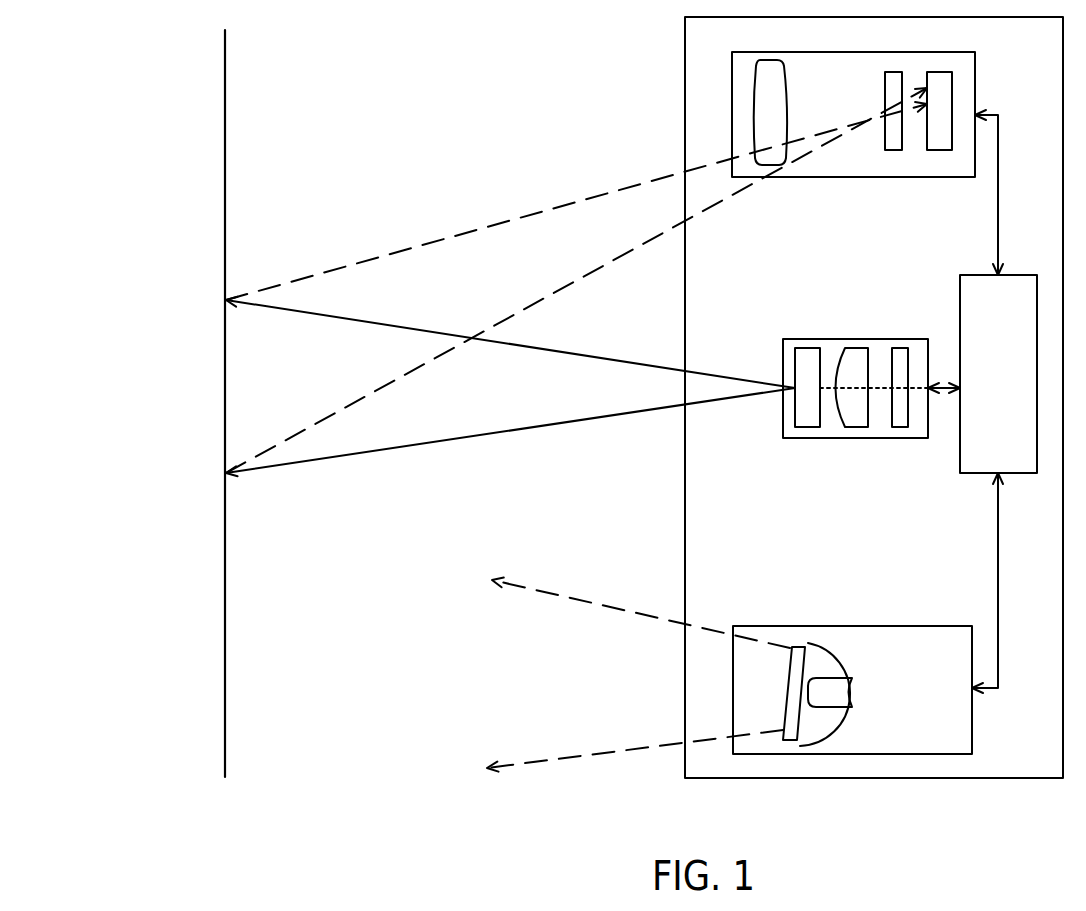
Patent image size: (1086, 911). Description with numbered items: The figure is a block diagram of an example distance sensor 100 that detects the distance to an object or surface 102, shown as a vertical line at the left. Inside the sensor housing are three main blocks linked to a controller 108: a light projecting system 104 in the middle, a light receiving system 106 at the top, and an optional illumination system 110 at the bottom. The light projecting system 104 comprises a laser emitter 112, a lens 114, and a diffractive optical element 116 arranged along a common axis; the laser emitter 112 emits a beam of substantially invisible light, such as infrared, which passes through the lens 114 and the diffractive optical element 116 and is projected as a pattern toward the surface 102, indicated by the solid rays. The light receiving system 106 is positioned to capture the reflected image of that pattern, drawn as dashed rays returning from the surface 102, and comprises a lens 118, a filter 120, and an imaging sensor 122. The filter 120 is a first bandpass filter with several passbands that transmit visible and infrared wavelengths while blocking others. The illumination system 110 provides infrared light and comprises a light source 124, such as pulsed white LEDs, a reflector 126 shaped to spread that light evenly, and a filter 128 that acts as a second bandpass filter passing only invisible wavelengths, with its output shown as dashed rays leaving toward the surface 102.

The distance sensor 100 is at (1056, 46).
The surface 102 is at (225, 110).
The light projecting system 104 is at (856, 340).
The light receiving system 106 is at (871, 86).
The controller 108 is at (1018, 386).
The illumination system 110 is at (964, 659).
The laser emitter 112 is at (900, 427).
The lens 114 is at (855, 427).
The diffractive optical element 116 is at (808, 427).
The lens 118 is at (770, 165).
The filter 120 is at (893, 150).
The imaging sensor 122 is at (940, 150).
The light source 124 is at (845, 707).
The reflector 126 is at (806, 747).
The filter 128 is at (790, 740).